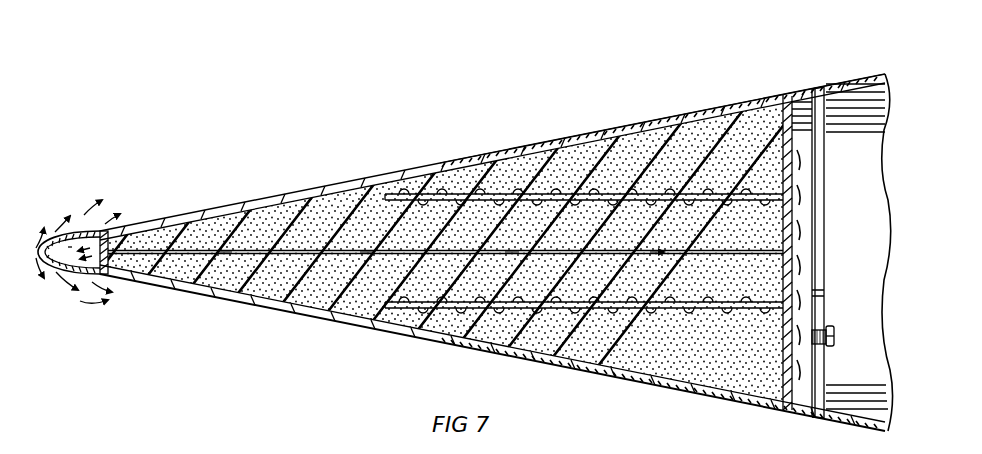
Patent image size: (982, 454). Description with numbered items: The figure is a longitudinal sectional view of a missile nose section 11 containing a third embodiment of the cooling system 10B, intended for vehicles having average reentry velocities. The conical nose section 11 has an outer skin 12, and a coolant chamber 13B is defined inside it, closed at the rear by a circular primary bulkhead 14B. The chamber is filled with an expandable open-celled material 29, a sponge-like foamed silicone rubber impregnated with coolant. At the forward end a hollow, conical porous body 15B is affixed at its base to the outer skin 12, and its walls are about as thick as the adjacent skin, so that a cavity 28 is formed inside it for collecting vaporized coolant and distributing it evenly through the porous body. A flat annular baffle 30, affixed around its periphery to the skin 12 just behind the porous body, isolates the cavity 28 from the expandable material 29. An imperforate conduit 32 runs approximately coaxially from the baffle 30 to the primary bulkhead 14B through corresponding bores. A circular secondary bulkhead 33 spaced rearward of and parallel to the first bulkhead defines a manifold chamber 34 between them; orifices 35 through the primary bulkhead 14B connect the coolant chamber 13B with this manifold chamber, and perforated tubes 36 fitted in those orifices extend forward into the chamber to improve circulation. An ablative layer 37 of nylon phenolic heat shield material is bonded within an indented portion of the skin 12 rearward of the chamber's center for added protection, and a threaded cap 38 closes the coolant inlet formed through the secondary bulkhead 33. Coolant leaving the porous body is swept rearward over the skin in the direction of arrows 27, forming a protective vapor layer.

The cooling system 10B is at (657, 85).
The nose section 11 is at (839, 80).
The outer skin 12 is at (332, 181).
The coolant chamber 13B is at (793, 192).
The primary bulkhead 14B is at (793, 283).
The porous body 15B is at (62, 232).
The arrows 27 is at (88, 281).
The cavity 28 is at (66, 250).
The expandable open-celled material 29 is at (247, 222).
The baffle 30 is at (83, 269).
The conduit 32 is at (497, 248).
The secondary bulkhead 33 is at (826, 222).
The manifold chamber 34 is at (813, 292).
The orifices 35 is at (777, 191).
The perforated tubes 36 is at (612, 192).
The ablative layer 37 is at (486, 153).
The cap 38 is at (836, 337).